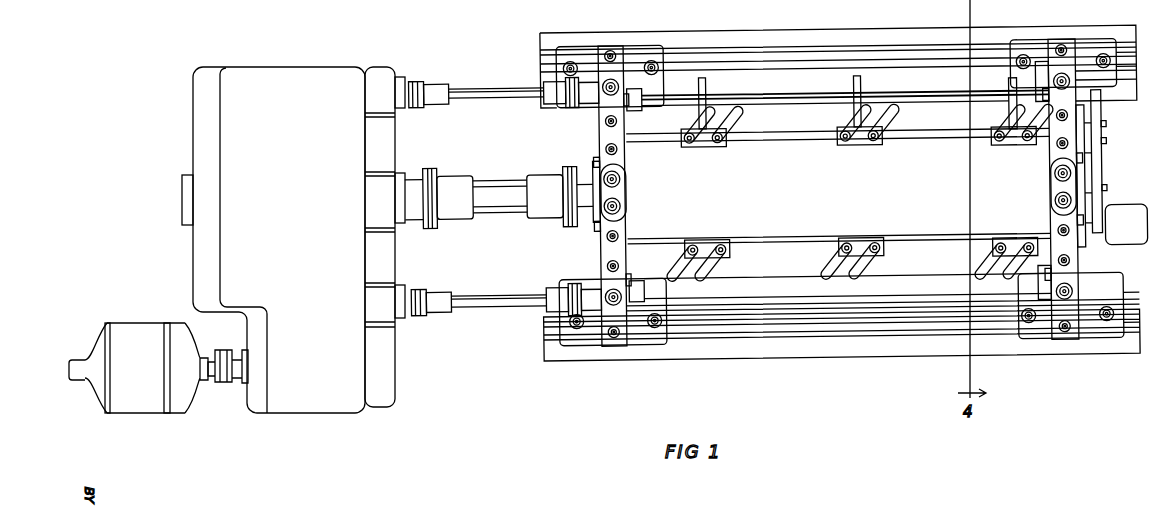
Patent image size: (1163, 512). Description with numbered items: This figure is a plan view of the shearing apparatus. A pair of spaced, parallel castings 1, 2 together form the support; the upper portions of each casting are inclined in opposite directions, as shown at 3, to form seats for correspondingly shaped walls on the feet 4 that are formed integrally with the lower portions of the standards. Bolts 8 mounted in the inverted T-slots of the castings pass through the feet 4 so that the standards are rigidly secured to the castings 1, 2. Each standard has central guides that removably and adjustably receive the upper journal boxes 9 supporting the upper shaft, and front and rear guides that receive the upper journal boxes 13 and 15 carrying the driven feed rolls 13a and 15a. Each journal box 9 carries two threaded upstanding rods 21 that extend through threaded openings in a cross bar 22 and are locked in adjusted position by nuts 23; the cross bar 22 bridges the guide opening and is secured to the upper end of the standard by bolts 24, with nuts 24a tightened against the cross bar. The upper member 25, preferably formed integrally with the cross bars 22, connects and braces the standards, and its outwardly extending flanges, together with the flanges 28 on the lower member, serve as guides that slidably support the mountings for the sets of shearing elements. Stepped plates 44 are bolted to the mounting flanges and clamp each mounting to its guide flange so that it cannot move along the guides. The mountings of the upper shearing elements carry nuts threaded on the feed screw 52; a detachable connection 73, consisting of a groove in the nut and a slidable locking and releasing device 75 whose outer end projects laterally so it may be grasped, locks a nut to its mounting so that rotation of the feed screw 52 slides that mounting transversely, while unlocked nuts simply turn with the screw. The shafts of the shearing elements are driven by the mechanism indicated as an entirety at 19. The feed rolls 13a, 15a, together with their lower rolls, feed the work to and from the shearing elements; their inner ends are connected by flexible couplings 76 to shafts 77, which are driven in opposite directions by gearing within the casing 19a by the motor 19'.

The casting 1 is at (897, 350).
The casting 2 is at (905, 44).
The inclined upper portions 3 is at (542, 56).
The feet 4 is at (656, 50).
The bolts 8 is at (572, 61).
The upper journal box 9 is at (598, 226).
The upper journal box 13 is at (634, 284).
The driven roll 13a is at (773, 295).
The upper journal box 15 is at (635, 103).
The driven roll 15a is at (836, 90).
The driving mechanism 19 is at (293, 240).
The motor 19' is at (148, 390).
The casing 19a is at (292, 407).
The upstanding rods 21 is at (618, 210).
The cross bar 22 is at (626, 245).
The nuts 23 is at (616, 188).
The bolts 24 is at (600, 152).
The nuts 24a is at (605, 150).
The upper member 25 is at (855, 196).
The flanges 28 is at (915, 145).
The stepped plates 44 is at (703, 143).
The feed screw 52 is at (500, 198).
The detachable connection 73 is at (844, 85).
The locking and releasing device 75 is at (860, 119).
The flexible couplings 76 is at (572, 101).
The shafts 77 is at (495, 90).